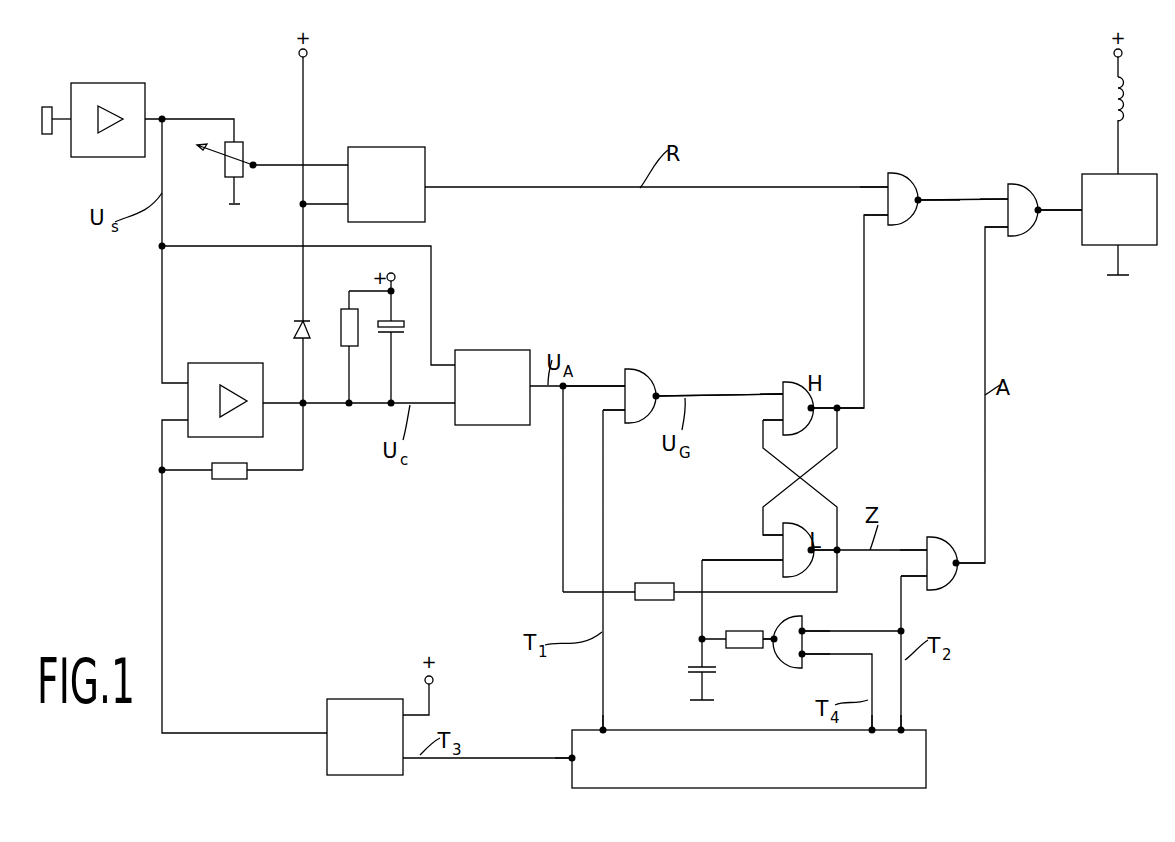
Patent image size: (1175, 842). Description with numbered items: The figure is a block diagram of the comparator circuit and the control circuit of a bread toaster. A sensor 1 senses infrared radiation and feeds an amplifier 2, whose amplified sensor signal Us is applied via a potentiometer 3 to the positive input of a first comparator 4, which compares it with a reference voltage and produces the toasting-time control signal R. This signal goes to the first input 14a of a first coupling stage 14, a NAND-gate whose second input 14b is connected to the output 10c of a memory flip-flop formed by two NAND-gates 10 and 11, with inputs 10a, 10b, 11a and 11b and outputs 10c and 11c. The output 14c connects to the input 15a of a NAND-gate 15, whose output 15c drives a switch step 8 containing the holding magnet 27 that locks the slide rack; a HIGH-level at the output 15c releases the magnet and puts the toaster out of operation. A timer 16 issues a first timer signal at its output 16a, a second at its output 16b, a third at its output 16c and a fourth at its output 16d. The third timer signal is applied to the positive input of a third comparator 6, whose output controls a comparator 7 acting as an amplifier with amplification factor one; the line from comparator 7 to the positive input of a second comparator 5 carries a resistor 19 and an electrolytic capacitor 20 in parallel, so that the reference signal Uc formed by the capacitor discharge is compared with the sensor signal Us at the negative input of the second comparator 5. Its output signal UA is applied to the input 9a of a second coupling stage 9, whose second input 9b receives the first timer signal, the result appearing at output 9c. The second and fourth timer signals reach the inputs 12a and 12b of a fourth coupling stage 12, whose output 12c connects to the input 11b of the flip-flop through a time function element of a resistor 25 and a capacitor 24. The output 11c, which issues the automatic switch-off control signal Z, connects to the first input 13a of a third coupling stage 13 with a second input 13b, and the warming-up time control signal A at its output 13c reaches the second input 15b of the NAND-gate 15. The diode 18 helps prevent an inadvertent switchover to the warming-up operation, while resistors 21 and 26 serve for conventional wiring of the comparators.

The sensor 1 is at (52, 128).
The amplifier 2 is at (145, 93).
The potentiometer 3 is at (243, 152).
The first comparator 4 is at (412, 175).
The second comparator 5 is at (503, 358).
The third comparator 6 is at (355, 700).
The comparator 7 is at (200, 362).
The switch step 8 is at (1095, 182).
The second coupling stage 9 is at (645, 375).
The input of second coupling stage 9a is at (625, 372).
The second input of second coupling stage 9b is at (600, 410).
The output of second coupling stage 9c is at (662, 393).
The NAND-gate 10 is at (800, 388).
The input of memory flip-flop 10a is at (783, 385).
The input of NAND-gate 10 10b is at (763, 420).
The output of memory flip-flop 10c is at (820, 402).
The NAND-gate 11 is at (783, 548).
The input of NAND-gate 11 11a is at (778, 537).
The input of memory flip-flop 11b is at (775, 565).
The output of memory flip-flop 11c is at (812, 555).
The fourth coupling stage 12 is at (790, 665).
The input of fourth coupling stage 12a is at (808, 625).
The input of fourth coupling stage 12b is at (805, 660).
The output of fourth coupling stage 12c is at (772, 645).
The third coupling stage 13 is at (940, 590).
The first input of third coupling stage 13a is at (923, 540).
The second input of third coupling stage 13b is at (920, 568).
The output of third coupling stage 13c is at (960, 568).
The first coupling stage 14 is at (905, 185).
The first input of first coupling stage 14a is at (880, 175).
The second input of first coupling stage 14b is at (885, 213).
The output of first coupling stage 14c is at (918, 205).
The NAND-gate 15 is at (1025, 225).
The input of NAND-gate 15 15a is at (1005, 185).
The second input of NAND-gate 15 15b is at (1005, 218).
The output of NAND-gate 15 15c is at (1040, 213).
The timer 16 is at (928, 760).
The first output of timer 16a is at (600, 725).
The second output of timer 16b is at (905, 728).
The third output of timer 16c is at (568, 757).
The fourth output of timer 16d is at (875, 725).
The diode 18 is at (302, 345).
The resistor 19 is at (345, 350).
The electrolytic capacitor 20 is at (396, 335).
The resistor 21 is at (235, 480).
The capacitor 24 is at (690, 670).
The resistor 25 is at (748, 630).
The resistor 26 is at (655, 583).
The holding magnet 27 is at (1120, 122).